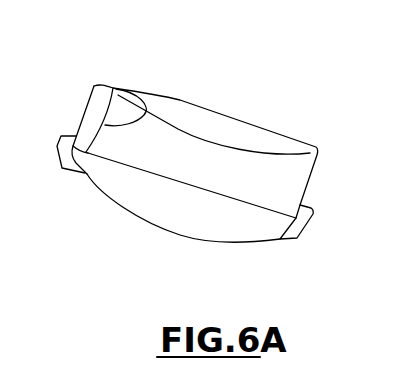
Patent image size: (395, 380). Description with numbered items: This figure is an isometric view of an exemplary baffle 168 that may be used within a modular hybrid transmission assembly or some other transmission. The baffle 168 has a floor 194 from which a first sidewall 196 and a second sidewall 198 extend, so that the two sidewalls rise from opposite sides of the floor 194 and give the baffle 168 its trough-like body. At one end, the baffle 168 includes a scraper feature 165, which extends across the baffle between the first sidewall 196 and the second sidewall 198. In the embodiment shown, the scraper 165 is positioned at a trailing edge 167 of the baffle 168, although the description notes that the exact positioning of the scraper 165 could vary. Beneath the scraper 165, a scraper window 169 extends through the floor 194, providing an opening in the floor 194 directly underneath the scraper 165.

The scraper feature 165 is at (102, 80).
The trailing edge 167 is at (93, 186).
The baffle 168 is at (242, 92).
The scraper window 169 is at (120, 124).
The floor 194 is at (234, 182).
The first sidewall 196 is at (177, 207).
The second sidewall 198 is at (243, 137).